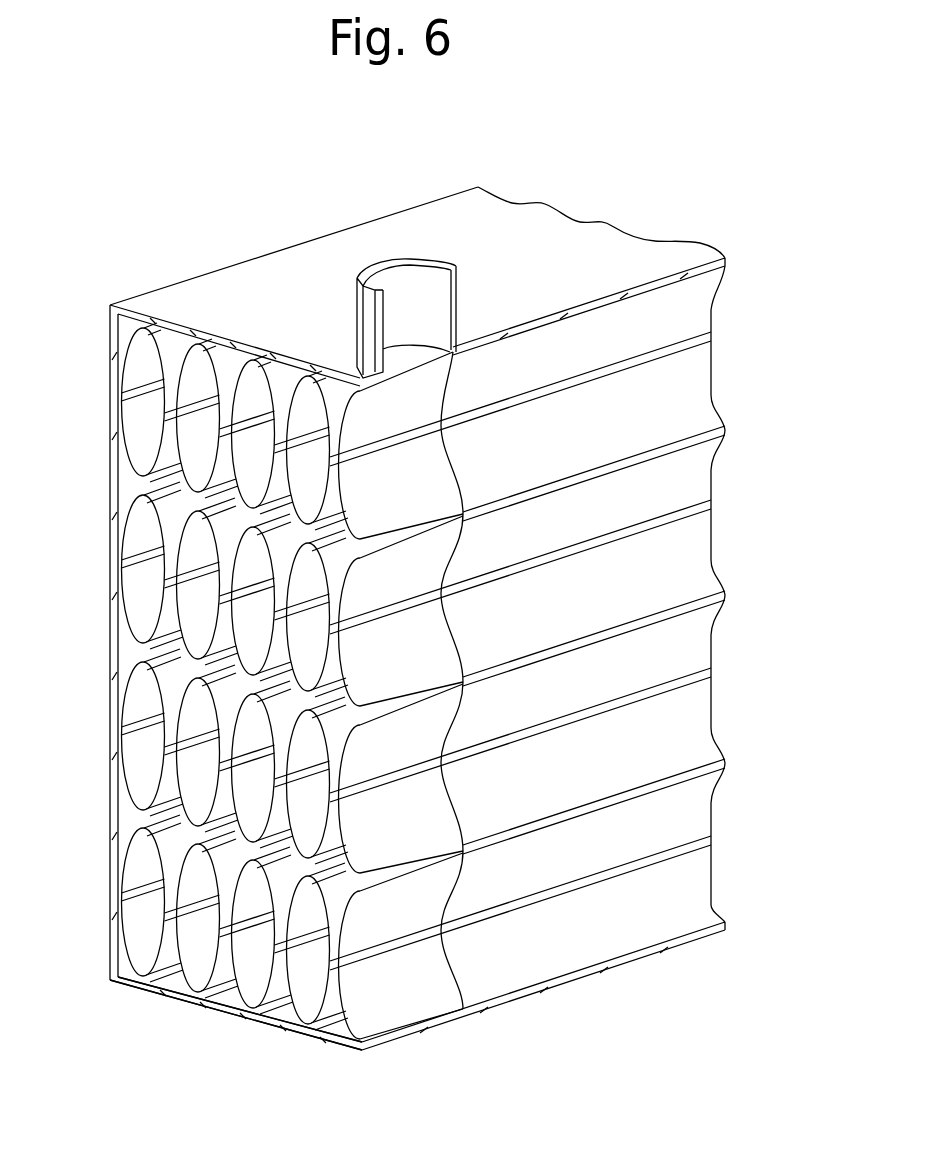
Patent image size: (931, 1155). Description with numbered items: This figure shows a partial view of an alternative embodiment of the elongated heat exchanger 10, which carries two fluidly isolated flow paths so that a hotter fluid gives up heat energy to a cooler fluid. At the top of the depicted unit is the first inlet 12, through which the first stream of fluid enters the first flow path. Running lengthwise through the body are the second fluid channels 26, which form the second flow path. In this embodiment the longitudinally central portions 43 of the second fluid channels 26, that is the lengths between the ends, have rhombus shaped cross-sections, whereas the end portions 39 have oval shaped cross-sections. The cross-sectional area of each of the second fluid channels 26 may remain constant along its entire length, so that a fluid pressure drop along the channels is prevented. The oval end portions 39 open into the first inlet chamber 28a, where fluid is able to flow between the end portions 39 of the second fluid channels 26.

The heat exchanger 10 is at (740, 201).
The first inlet 12 is at (377, 262).
The second fluid channels 26 is at (140, 421).
The first inlet chamber 28a is at (170, 977).
The end portions 39 is at (303, 975).
The longitudinally central portions 43 is at (612, 920).